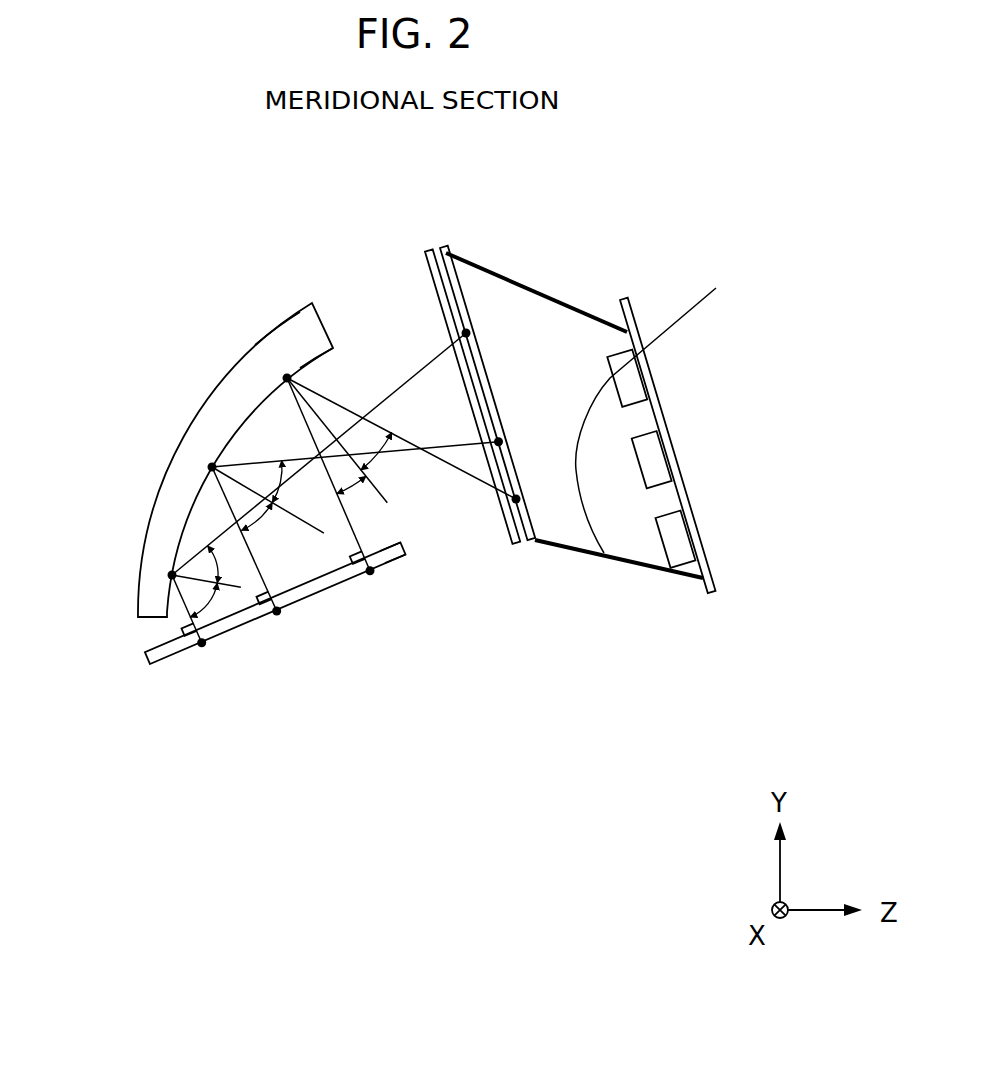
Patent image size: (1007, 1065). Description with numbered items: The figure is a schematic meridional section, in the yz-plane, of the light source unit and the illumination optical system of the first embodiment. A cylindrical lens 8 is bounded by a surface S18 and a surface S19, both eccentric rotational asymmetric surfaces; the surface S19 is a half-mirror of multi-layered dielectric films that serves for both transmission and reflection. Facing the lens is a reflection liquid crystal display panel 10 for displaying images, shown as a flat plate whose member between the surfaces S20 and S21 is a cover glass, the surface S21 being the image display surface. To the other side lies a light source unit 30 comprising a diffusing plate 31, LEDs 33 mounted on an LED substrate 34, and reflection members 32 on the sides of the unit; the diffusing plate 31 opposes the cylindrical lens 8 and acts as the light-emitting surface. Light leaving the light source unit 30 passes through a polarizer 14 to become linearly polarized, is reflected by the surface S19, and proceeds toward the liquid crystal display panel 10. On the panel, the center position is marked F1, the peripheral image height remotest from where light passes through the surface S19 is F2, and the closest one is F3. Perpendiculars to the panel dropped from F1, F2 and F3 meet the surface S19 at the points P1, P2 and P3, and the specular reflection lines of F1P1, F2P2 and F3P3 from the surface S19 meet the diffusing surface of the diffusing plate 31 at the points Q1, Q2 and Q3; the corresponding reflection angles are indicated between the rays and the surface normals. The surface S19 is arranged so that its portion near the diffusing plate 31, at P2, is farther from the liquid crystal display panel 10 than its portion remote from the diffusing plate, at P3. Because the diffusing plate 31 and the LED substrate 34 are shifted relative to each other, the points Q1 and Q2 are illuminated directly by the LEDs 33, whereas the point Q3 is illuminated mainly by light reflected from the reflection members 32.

The cylindrical lens 8 is at (147, 618).
The surface S18 is at (280, 325).
The surface S19 is at (325, 350).
The reflection liquid crystal display panel 10 is at (148, 662).
The surface S20 is at (408, 535).
The surface S21 is at (406, 556).
The polarizer 14 is at (525, 542).
The light source unit 30 is at (644, 449).
The diffusing plate 31 is at (535, 526).
The reflection members 32 is at (582, 309).
The LED 33 is at (678, 537).
The LED substrate 34 is at (700, 562).
The point P1 is at (210, 465).
The point P2 is at (285, 376).
The point P3 is at (170, 574).
The center position F1 is at (277, 615).
The image height F2 is at (370, 575).
The image height F3 is at (202, 646).
The point Q1 is at (499, 440).
The point Q2 is at (517, 495).
The point Q3 is at (467, 331).